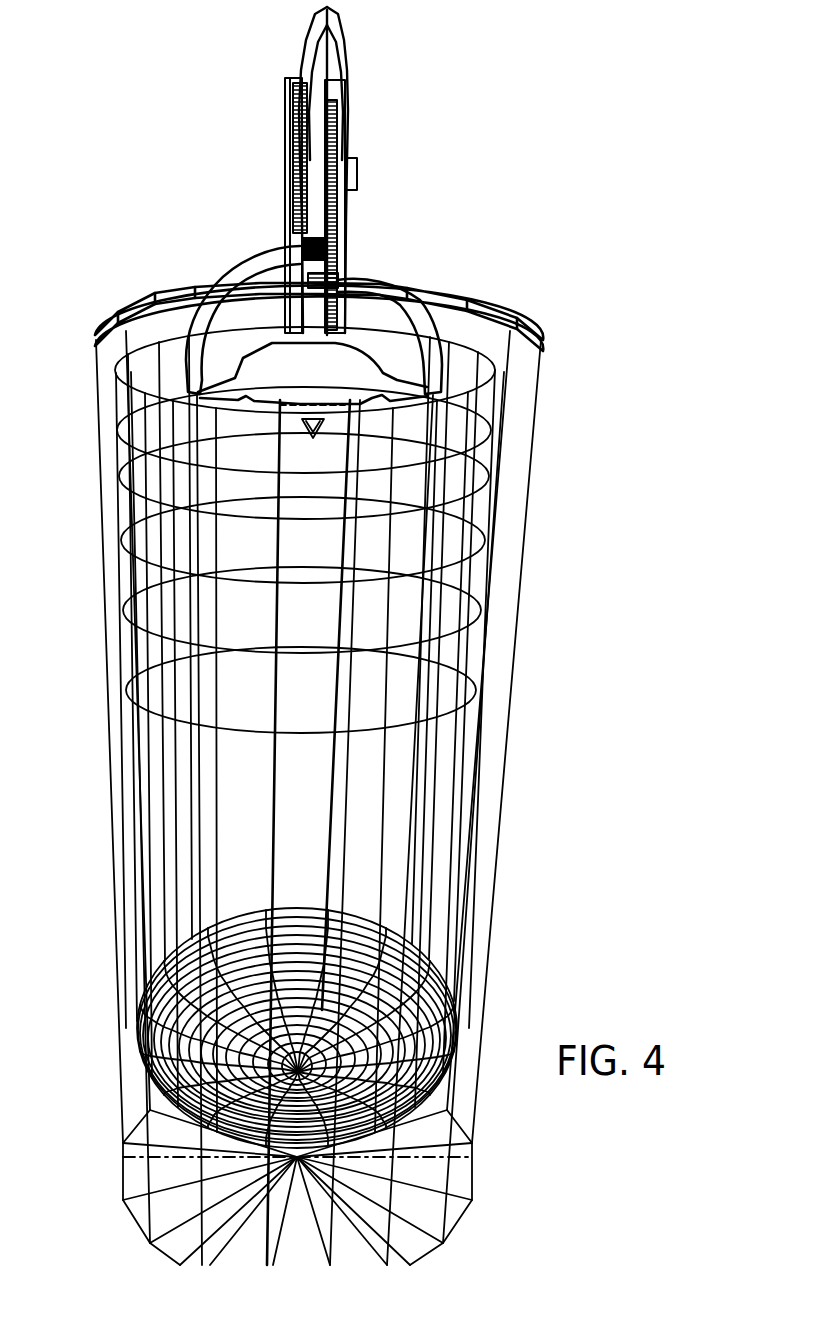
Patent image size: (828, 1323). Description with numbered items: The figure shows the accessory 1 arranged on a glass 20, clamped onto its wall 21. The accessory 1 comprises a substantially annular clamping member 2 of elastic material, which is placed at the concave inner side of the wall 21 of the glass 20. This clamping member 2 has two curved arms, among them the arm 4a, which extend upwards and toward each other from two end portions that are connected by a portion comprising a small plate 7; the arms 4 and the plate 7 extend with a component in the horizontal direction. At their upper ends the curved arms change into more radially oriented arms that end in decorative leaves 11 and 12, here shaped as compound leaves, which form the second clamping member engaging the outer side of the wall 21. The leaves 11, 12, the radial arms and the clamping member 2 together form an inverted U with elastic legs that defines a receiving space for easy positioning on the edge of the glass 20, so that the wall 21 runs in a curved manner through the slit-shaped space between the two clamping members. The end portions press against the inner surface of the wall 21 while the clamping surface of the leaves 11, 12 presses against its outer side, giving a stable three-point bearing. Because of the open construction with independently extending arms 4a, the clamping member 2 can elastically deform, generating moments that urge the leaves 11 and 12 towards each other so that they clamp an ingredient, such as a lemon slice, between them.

The accessory 1 is at (388, 177).
The clamping member 2 is at (406, 299).
The curved arms 4 is at (360, 282).
The curved arm 4a is at (224, 282).
The small plate 7 is at (313, 373).
The decorative leaf 11 is at (286, 129).
The decorative leaf 12 is at (355, 172).
The glass 20 is at (498, 788).
The wall 21 is at (540, 388).